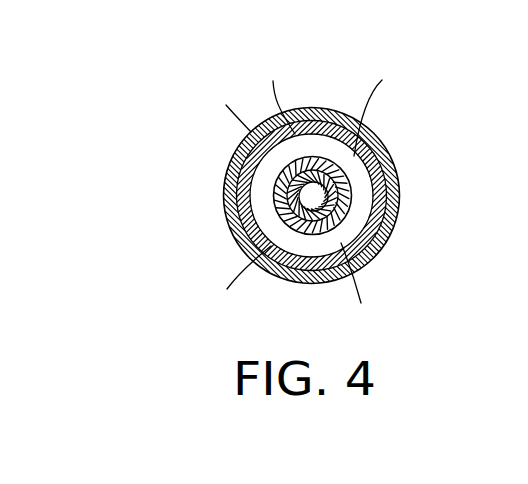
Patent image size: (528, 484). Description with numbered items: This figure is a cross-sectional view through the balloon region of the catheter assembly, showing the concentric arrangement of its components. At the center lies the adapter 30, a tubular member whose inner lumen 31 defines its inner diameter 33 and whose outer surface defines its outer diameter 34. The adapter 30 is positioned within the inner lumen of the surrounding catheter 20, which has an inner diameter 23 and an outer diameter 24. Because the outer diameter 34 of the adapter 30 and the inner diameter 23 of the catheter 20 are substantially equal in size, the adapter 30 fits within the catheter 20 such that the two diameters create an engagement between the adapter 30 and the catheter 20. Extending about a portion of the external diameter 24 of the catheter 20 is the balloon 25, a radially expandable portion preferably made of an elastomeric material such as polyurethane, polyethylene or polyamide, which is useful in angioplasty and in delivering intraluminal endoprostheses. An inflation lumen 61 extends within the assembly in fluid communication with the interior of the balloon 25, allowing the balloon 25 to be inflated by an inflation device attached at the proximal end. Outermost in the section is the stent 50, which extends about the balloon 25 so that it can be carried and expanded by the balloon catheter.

The catheter 20 is at (322, 151).
The inner diameter 23 is at (345, 178).
The outer diameter 24 is at (346, 148).
The balloon 25 is at (392, 215).
The adapter 30 is at (287, 126).
The inner lumen 31 is at (263, 238).
The inner diameter 33 is at (243, 124).
The outer diameter 34 is at (306, 189).
The stent 50 is at (377, 246).
The inflation lumen 61 is at (333, 235).